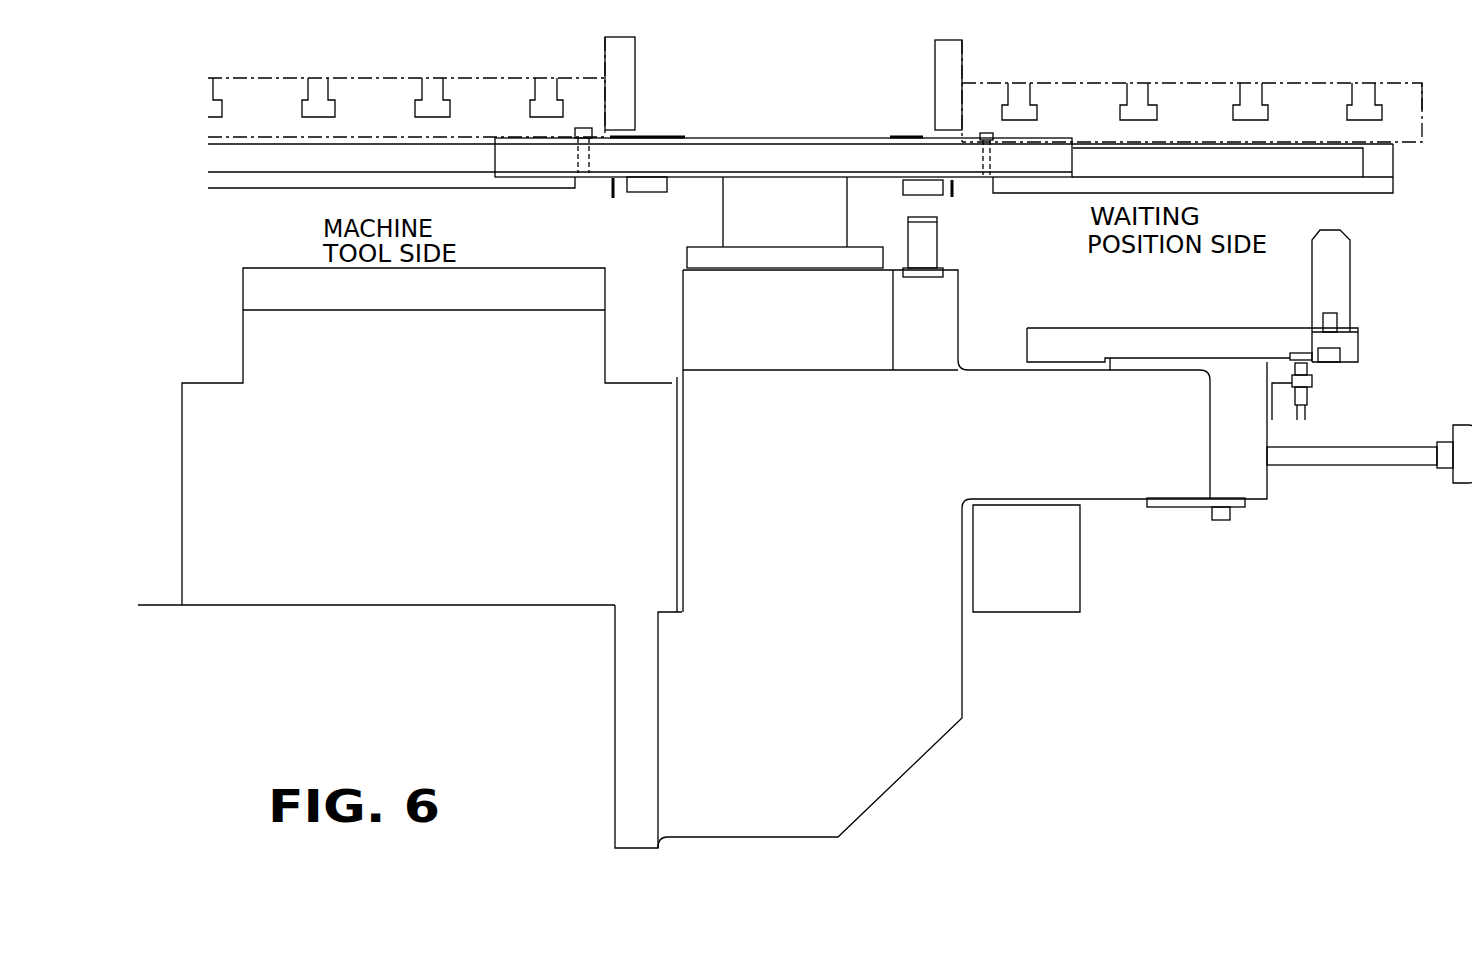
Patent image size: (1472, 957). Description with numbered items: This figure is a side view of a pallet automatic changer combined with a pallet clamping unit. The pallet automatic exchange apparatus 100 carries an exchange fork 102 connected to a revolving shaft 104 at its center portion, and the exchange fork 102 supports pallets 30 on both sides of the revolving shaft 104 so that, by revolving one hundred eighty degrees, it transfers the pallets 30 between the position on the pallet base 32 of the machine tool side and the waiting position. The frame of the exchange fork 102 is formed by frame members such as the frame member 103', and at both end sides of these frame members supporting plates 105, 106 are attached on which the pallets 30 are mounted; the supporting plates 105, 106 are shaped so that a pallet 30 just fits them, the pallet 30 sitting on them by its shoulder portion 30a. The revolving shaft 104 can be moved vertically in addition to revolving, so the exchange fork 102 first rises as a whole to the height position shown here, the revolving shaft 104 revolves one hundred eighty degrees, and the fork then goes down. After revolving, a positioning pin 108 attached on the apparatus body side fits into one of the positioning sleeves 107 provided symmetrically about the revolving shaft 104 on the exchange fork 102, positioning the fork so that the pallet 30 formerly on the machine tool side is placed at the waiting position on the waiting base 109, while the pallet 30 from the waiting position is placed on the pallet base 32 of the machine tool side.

The pallet 30 is at (465, 75).
The shoulder portion 30a is at (600, 127).
The pallet base 32 is at (253, 292).
The pallet automatic exchange apparatus 100 is at (672, 393).
The exchange fork 102 is at (873, 121).
The frame member 103' is at (944, 128).
The revolving shaft 104 is at (732, 213).
The supporting plate 105 is at (280, 162).
The supporting plate 106 is at (1340, 167).
The positioning sleeve 107 is at (640, 188).
The positioning pin 108 is at (930, 240).
The waiting base 109 is at (1132, 343).